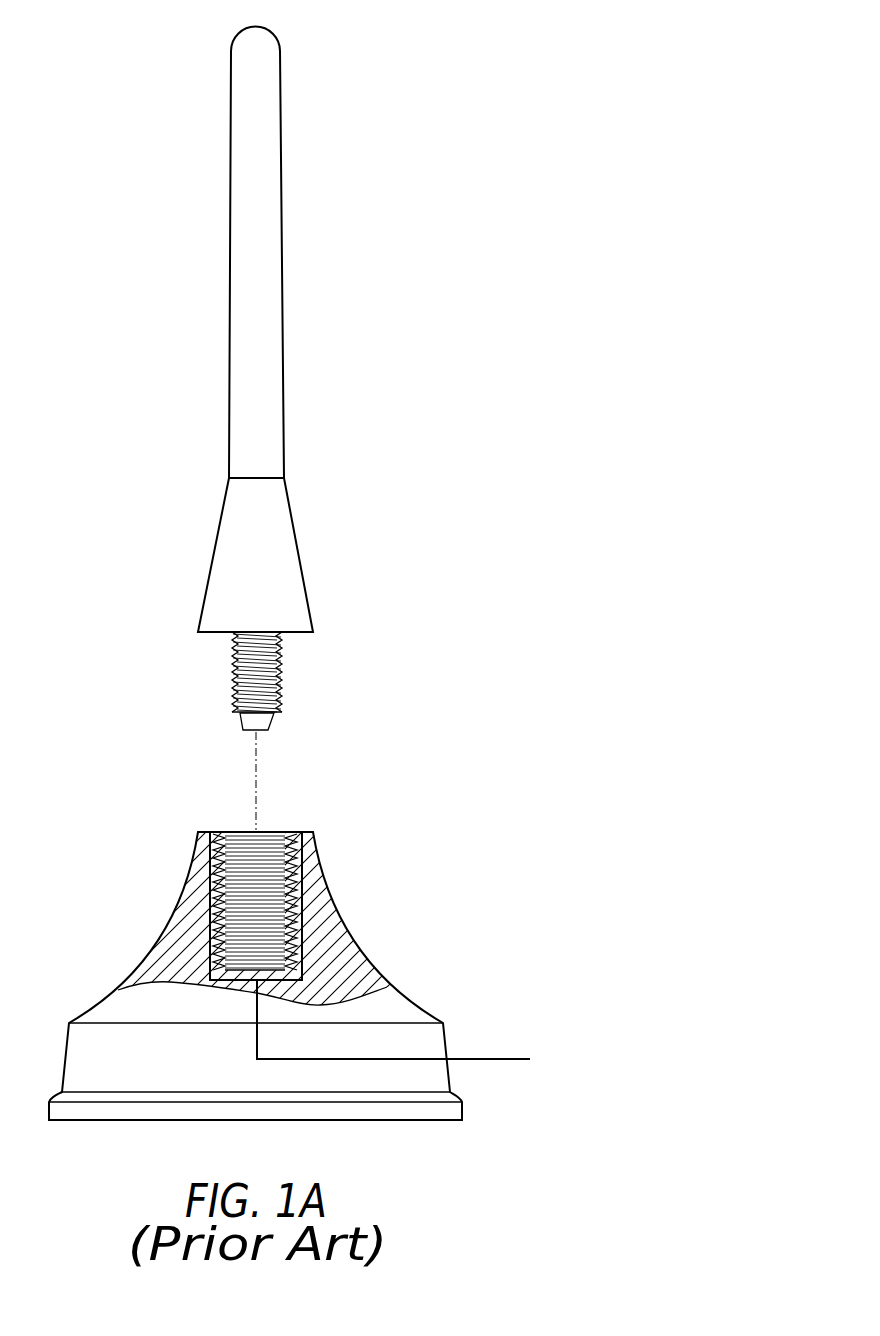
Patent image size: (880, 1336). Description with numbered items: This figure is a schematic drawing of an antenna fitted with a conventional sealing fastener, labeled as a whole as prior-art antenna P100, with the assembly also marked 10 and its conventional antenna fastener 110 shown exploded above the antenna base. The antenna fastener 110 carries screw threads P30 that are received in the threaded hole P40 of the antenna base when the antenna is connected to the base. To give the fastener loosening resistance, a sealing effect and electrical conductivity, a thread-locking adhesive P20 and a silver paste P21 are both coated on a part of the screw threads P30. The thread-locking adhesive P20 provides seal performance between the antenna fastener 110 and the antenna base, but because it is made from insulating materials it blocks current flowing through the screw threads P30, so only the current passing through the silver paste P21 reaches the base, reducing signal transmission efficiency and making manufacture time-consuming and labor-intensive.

The prior art antenna P100 is at (542, 27).
The antenna rod 10 is at (208, 668).
The antenna fastener 110 is at (208, 673).
The thread-locking adhesive P20 is at (284, 652).
The silver paste P21 is at (240, 714).
The screw threads P30 is at (278, 720).
The threaded hole of base P40 is at (272, 832).